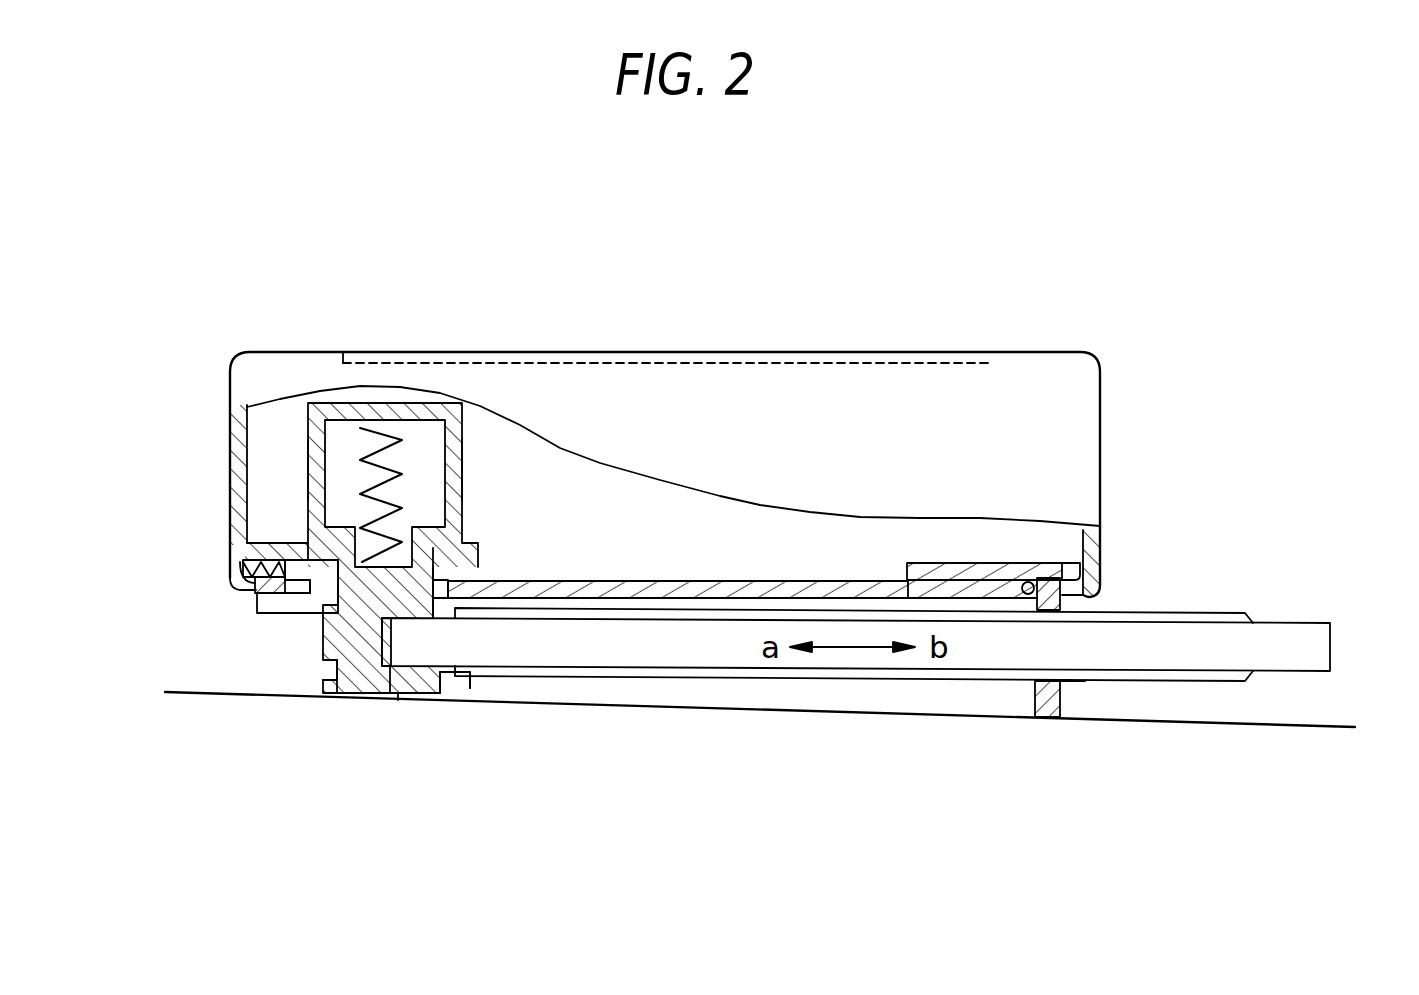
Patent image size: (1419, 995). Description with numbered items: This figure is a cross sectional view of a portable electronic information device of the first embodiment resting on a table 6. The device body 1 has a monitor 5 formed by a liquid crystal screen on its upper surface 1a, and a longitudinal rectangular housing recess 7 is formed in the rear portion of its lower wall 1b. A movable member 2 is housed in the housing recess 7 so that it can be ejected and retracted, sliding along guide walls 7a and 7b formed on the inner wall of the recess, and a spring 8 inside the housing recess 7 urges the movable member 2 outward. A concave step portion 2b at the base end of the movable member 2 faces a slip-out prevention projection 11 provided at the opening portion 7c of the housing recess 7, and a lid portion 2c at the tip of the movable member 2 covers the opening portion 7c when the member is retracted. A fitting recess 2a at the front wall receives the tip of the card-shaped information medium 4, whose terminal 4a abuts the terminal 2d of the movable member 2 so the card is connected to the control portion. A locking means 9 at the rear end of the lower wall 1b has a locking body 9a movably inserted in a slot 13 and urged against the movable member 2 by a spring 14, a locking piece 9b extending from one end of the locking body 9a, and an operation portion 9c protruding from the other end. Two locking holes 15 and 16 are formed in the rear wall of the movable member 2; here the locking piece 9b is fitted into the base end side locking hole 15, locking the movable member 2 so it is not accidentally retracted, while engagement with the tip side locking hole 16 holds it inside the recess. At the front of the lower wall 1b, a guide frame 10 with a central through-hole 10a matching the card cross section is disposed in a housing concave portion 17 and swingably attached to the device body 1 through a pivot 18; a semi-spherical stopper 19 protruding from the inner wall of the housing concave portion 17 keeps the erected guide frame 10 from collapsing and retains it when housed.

The device body 1 is at (1062, 419).
The upper surface 1a is at (1035, 352).
The lower wall 1b is at (722, 600).
The movable member 2 is at (385, 737).
The fitting recess 2a is at (395, 682).
The concave step portion 2b is at (433, 545).
The lid portion 2c is at (452, 680).
The terminal 2d is at (397, 700).
The card-shaped information medium 4 is at (1300, 635).
The terminal 4a is at (405, 640).
The monitor 5 is at (765, 352).
The table 6 is at (1222, 728).
The housing recess 7 is at (434, 445).
The guide wall 7a is at (440, 457).
The guide wall 7b is at (330, 467).
The opening portion 7c is at (438, 597).
The spring 8 is at (367, 440).
The locking means 9 is at (212, 624).
The locking body 9a is at (298, 563).
The locking piece 9b is at (300, 560).
The operation portion 9c is at (277, 607).
The guide frame 10 is at (1043, 712).
The through-hole 10a is at (1052, 680).
The slip-out prevention projection 11 is at (440, 573).
The slot 13 is at (238, 584).
The spring 14 is at (243, 563).
The locking hole 15 is at (336, 698).
The locking hole 16 is at (337, 670).
The housing concave portion 17 is at (952, 588).
The pivot 18 is at (1048, 578).
The semi-spherical stopper 19 is at (996, 577).